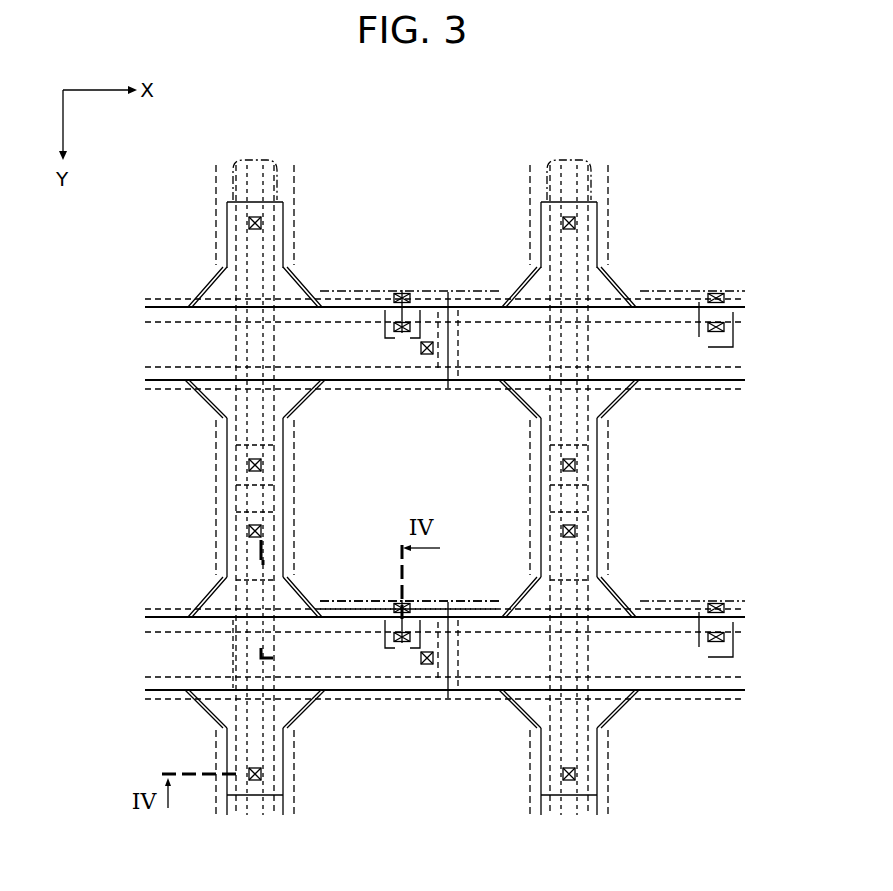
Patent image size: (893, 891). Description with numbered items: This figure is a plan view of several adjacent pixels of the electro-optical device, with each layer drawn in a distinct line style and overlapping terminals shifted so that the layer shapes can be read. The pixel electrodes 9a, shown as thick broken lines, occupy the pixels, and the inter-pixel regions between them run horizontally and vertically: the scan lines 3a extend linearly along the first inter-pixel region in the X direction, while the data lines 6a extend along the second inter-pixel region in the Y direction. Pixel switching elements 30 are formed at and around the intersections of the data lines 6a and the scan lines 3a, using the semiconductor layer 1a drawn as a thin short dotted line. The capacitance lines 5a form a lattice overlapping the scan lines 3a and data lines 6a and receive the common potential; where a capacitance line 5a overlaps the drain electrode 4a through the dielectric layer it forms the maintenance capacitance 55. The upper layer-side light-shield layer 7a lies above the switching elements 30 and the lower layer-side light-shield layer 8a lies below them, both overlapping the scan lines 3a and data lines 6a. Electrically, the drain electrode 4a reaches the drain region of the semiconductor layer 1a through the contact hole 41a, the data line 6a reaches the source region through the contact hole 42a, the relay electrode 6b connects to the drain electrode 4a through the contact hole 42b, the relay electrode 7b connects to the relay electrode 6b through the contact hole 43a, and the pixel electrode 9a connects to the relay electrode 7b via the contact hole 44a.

The semiconductor layer 1a is at (200, 708).
The scan line 3a is at (142, 313).
The drain electrode 4a is at (432, 698).
The capacitance line 5a is at (470, 698).
The data line 6a is at (252, 159).
The relay electrode 6b is at (353, 702).
The upper layer-side light-shield layer 7a is at (301, 448).
The relay electrode 7b is at (320, 604).
The lower layer-side light-shield layer 8a is at (301, 543).
The pixel electrode 9a is at (508, 382).
The pixel switching element 30 is at (220, 636).
The contact hole 41a is at (250, 528).
The contact hole 42a is at (252, 780).
The contact hole 42b is at (393, 637).
The contact hole 43a is at (425, 665).
The contact hole 44a is at (409, 607).
The maintenance capacitance 55 is at (498, 803).